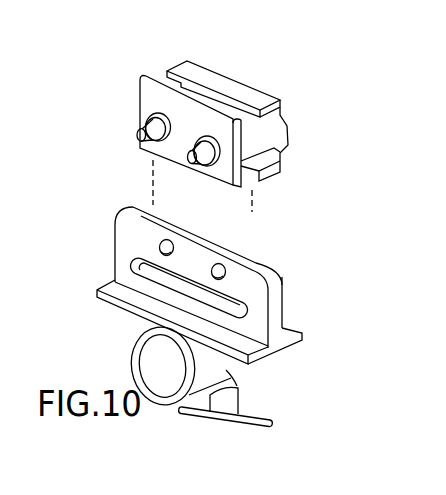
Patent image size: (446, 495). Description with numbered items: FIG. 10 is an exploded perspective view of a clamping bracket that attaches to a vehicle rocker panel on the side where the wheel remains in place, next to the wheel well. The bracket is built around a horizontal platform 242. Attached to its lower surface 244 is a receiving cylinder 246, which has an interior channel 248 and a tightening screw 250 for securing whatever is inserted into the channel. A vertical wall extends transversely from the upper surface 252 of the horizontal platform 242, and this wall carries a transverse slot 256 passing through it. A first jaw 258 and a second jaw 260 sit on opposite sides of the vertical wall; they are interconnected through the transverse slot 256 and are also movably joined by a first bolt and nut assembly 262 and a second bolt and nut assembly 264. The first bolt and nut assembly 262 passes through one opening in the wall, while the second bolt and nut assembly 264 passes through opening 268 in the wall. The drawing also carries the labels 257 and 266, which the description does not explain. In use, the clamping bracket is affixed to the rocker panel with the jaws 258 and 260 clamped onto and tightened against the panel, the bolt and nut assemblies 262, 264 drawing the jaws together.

The horizontal platform 242 is at (225, 380).
The lower surface 244 is at (274, 363).
The receiving cylinder 246 is at (241, 387).
The interior channel 248 is at (155, 353).
The tightening screw 250 is at (230, 421).
The upper surface 252 is at (287, 290).
The transverse slot 256 is at (148, 276).
The top lip 257 is at (266, 263).
The first jaw 258 is at (143, 84).
The second jaw 260 is at (220, 80).
The first bolt and nut assembly 262 is at (140, 132).
The second bolt and nut assembly 264 is at (190, 158).
The hole 266 is at (163, 246).
The opening 268 is at (219, 268).